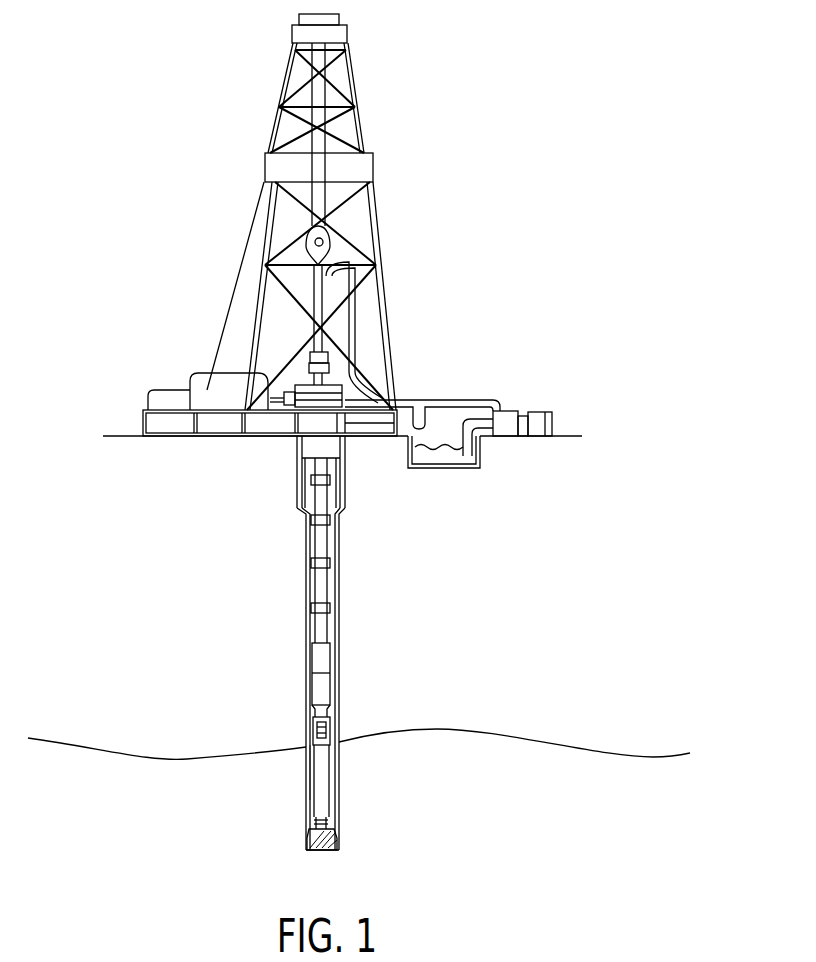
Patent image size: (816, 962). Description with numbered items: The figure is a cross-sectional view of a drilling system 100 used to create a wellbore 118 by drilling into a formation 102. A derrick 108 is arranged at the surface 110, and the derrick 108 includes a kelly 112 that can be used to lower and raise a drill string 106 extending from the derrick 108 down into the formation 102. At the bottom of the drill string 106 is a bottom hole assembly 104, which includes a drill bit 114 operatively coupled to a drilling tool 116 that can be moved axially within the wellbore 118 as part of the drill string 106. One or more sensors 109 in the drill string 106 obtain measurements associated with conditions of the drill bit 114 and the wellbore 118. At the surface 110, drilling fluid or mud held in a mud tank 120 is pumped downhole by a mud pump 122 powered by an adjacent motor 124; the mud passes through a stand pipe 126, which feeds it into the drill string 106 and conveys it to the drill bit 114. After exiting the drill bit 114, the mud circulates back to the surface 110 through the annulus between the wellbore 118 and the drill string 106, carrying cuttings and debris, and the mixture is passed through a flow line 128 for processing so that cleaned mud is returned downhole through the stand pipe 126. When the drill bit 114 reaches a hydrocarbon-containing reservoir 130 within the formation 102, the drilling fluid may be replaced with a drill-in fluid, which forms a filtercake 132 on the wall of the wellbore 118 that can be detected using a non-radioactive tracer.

The drilling system 100 is at (552, 216).
The formation 102 is at (146, 525).
The bottom hole assembly 104 is at (262, 674).
The drill string 106 is at (322, 585).
The derrick 108 is at (268, 230).
The sensor 109 is at (327, 730).
The surface 110 is at (113, 435).
The kelly 112 is at (326, 241).
The drill bit 114 is at (338, 838).
The drilling tool 116 is at (322, 785).
The wellbore 118 is at (307, 550).
The mud tank 120 is at (450, 462).
The mud pump 122 is at (513, 412).
The motor 124 is at (543, 423).
The stand pipe 126 is at (354, 328).
The flow line 128 is at (420, 412).
The reservoir 130 is at (190, 834).
The filtercake 132 is at (307, 800).